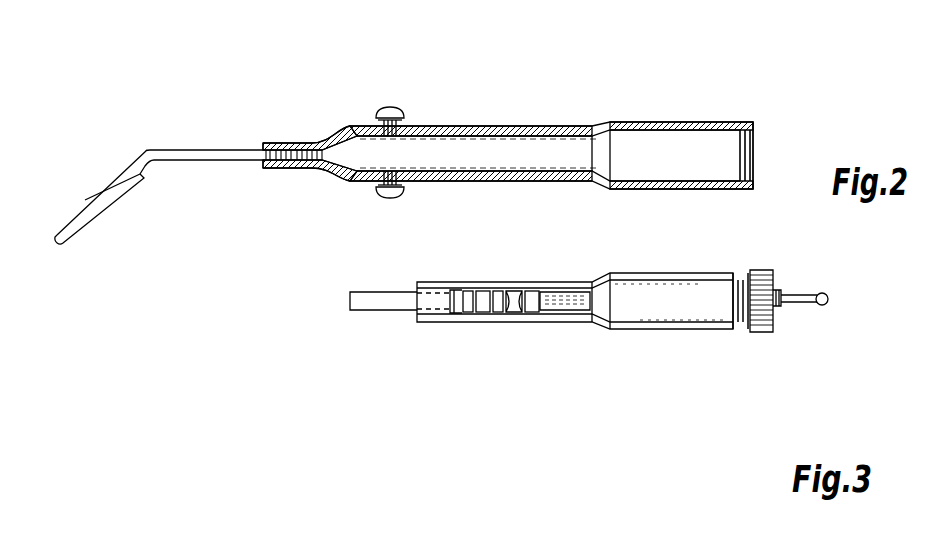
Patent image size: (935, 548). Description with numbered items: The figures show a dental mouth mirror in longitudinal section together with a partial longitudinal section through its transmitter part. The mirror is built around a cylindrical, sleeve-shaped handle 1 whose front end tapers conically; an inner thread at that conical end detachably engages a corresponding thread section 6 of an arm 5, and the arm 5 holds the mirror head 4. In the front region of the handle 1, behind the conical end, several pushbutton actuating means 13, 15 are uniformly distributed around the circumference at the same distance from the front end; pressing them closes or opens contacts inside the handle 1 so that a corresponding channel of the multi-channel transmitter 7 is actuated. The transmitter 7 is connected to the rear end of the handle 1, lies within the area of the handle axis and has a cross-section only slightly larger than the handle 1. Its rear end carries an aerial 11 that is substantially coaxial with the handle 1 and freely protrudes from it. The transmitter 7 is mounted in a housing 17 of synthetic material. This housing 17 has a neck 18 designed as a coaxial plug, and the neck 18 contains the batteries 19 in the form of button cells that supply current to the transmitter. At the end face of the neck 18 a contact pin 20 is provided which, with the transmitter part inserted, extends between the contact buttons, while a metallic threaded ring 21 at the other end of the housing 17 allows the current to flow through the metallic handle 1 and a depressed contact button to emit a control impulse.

In FIG. 2, the sleeve-shaped handle 1 is at (483, 125).
In FIG. 2, the mirror head 4 is at (113, 190).
In FIG. 2, the arm 5 is at (188, 150).
In FIG. 2, the thread section 6 is at (283, 165).
In FIG. 2, the actuating means 13 is at (393, 107).
In FIG. 2, the actuating means 15 is at (386, 198).
In FIG. 3, the transmitter 7 is at (648, 350).
In FIG. 3, the aerial 11 is at (803, 305).
In FIG. 3, the housing 17 is at (692, 330).
In FIG. 3, the neck 18 is at (517, 320).
In FIG. 3, the batteries 19 is at (540, 298).
In FIG. 3, the contact pin 20 is at (392, 313).
In FIG. 3, the metallic threaded ring 21 is at (738, 330).